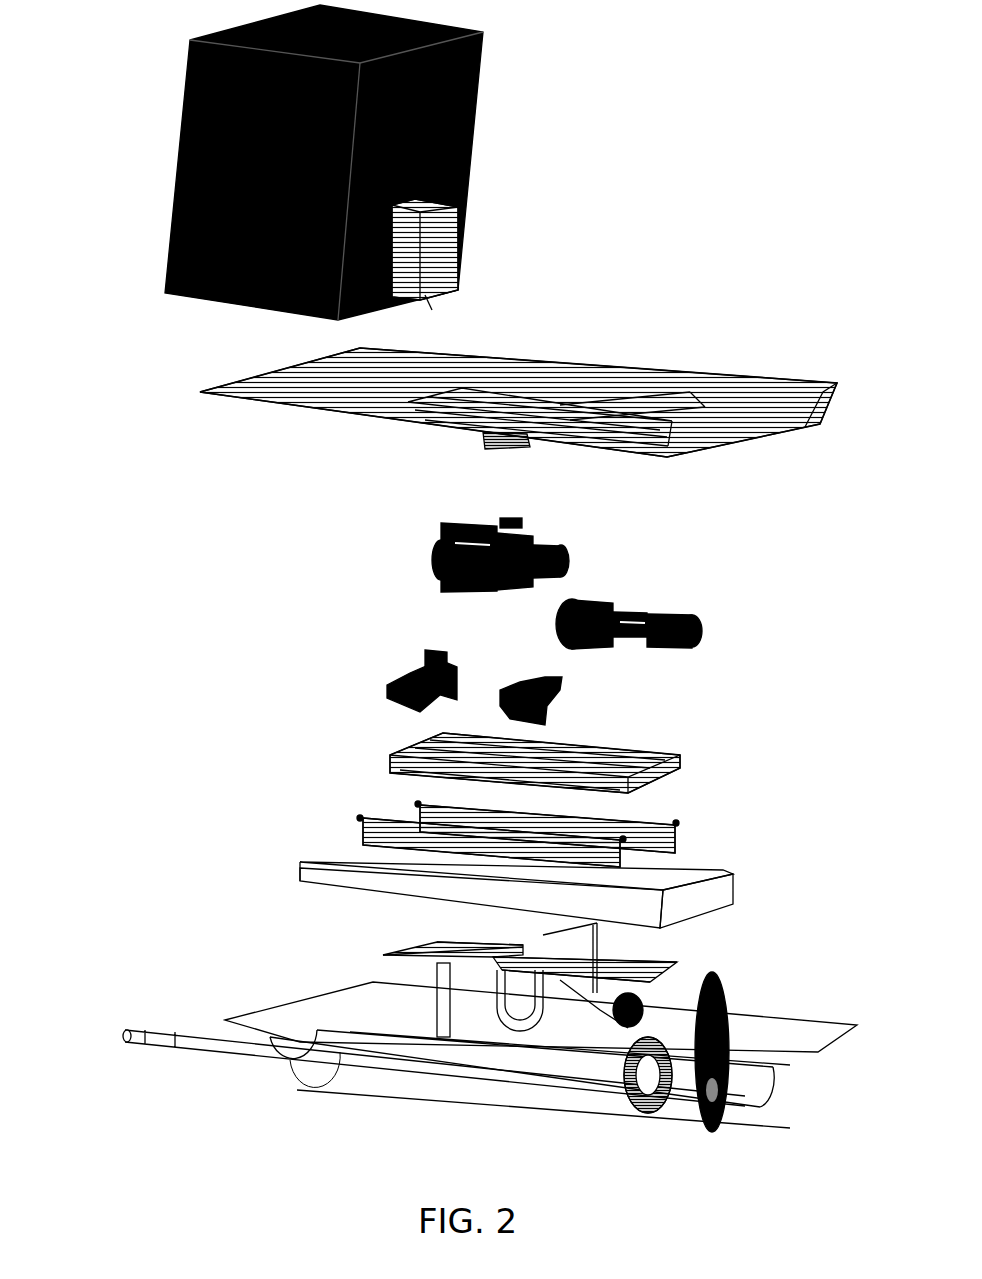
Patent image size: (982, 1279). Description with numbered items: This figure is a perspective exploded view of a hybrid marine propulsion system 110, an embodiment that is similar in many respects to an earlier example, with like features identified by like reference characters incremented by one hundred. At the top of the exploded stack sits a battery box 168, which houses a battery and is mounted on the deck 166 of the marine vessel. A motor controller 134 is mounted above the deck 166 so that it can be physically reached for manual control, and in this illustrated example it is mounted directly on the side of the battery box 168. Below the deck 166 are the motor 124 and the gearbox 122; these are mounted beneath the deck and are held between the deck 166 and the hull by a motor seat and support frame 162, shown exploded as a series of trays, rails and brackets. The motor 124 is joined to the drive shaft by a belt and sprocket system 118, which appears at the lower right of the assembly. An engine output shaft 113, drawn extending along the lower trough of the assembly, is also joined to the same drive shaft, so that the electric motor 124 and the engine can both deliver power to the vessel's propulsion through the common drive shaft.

The hybrid marine propulsion system 110 is at (138, 31).
The battery box 168 is at (172, 203).
The motor controller 134 is at (432, 292).
The deck 166 is at (200, 393).
The motor 124 is at (557, 546).
The gearbox 122 is at (703, 618).
The motor seat and support frame 162 is at (305, 787).
The belt and sprocket system 118 is at (745, 973).
The engine output shaft 113 is at (490, 1018).